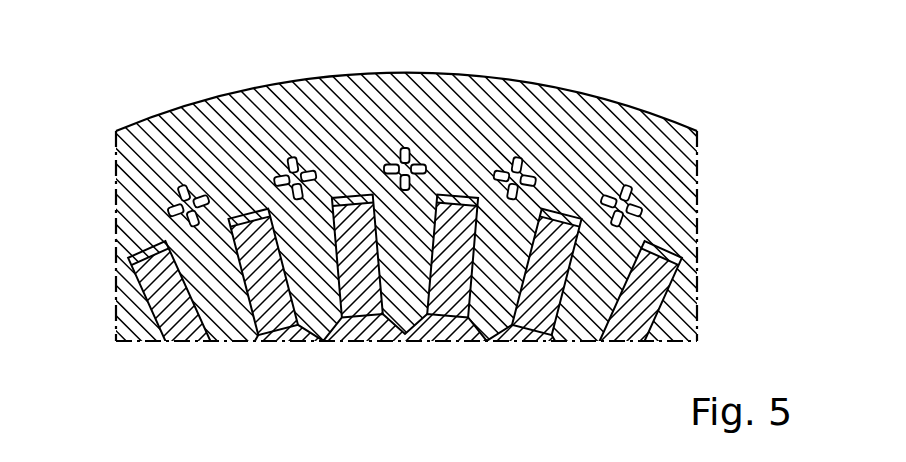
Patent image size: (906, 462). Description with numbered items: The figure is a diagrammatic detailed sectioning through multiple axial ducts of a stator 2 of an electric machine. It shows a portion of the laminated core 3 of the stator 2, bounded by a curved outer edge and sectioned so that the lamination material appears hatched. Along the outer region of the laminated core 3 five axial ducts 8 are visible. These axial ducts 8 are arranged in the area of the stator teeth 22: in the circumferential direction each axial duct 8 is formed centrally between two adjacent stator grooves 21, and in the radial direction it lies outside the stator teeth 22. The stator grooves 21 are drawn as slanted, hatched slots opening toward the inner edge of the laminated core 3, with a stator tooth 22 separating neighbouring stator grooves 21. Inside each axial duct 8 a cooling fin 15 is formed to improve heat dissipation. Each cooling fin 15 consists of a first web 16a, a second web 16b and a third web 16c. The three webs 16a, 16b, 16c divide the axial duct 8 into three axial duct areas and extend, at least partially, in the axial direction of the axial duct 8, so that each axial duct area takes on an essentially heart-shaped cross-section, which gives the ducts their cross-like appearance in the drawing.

The stator 2 is at (618, 84).
The laminated core 3 is at (462, 105).
The axial duct 8 is at (195, 168).
The cooling fin 15 is at (163, 198).
The first web 16a is at (185, 215).
The second web 16b is at (184, 190).
The third web 16c is at (200, 208).
The stator groove 21 is at (142, 285).
The stator tooth 22 is at (603, 258).